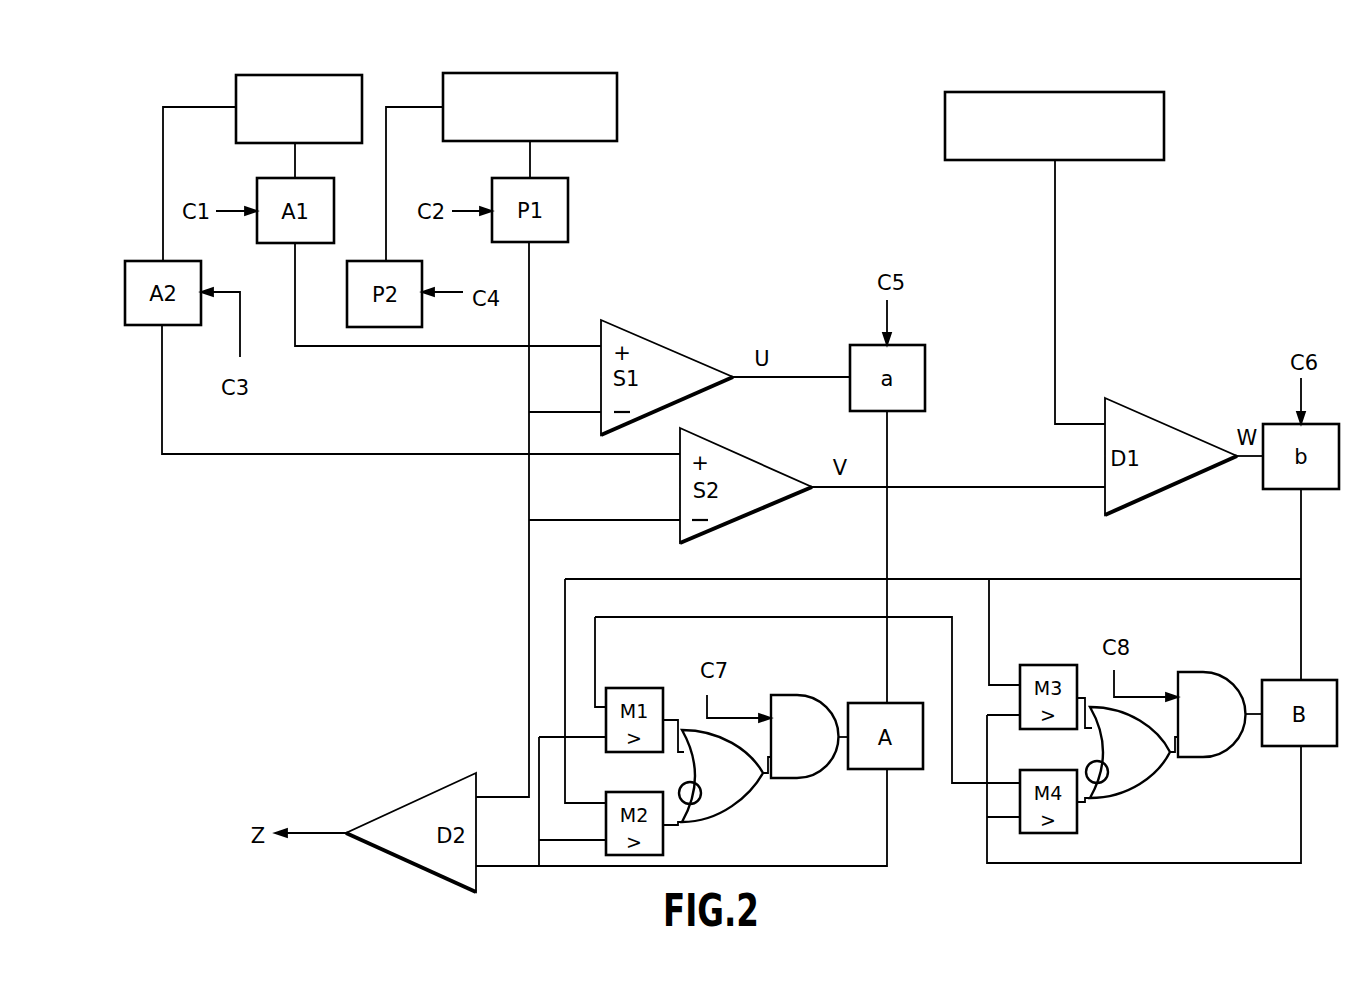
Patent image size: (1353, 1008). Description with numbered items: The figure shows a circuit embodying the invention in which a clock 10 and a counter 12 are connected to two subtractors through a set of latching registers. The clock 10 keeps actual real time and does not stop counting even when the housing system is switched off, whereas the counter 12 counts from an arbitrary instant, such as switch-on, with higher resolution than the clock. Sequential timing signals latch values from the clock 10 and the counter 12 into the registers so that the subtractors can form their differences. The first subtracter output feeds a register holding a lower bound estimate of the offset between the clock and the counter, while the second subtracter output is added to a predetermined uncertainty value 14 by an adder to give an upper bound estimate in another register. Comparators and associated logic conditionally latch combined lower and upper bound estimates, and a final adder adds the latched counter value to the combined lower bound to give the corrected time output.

The clock 10 is at (236, 90).
The counter 12 is at (620, 100).
The uncertainty value 14 is at (1167, 120).